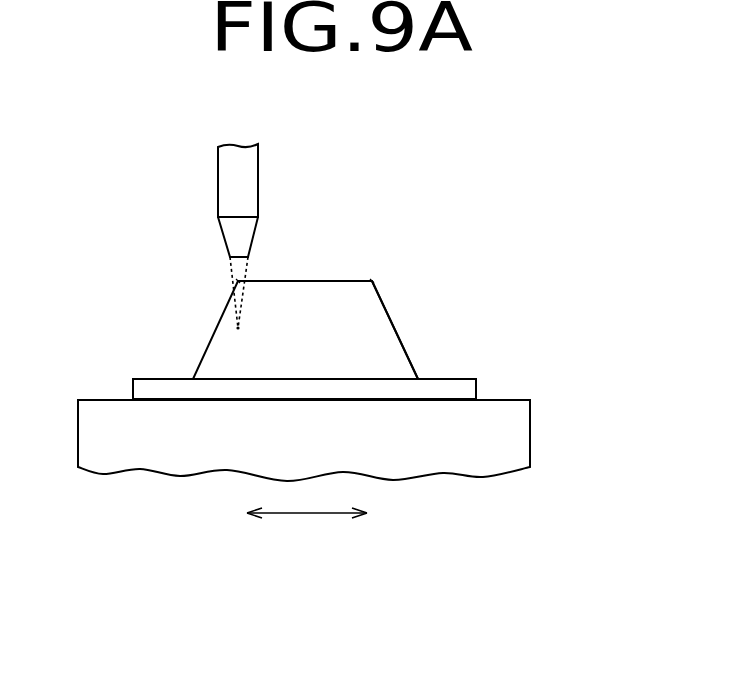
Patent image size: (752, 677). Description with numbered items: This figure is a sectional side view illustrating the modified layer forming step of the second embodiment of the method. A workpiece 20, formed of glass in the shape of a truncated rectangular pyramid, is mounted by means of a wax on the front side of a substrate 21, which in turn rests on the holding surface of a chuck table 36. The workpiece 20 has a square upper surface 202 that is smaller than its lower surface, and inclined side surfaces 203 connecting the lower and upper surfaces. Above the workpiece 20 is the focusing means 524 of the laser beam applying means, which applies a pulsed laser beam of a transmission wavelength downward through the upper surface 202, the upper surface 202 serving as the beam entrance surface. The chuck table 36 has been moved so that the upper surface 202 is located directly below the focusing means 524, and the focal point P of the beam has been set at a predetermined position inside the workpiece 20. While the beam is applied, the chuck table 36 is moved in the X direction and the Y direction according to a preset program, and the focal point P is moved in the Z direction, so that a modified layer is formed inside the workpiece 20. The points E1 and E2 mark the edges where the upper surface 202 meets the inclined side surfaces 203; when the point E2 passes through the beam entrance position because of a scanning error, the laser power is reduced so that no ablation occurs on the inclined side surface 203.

The focusing means 524 is at (230, 178).
The workpiece 20 is at (351, 264).
The upper surface 202 is at (302, 280).
The inclined side surface 203 is at (395, 324).
The first edge E1 is at (237, 279).
The point E2 is at (372, 281).
The focal point P is at (238, 328).
The substrate 21 is at (142, 392).
The chuck table 36 is at (505, 437).
The X direction X is at (307, 528).